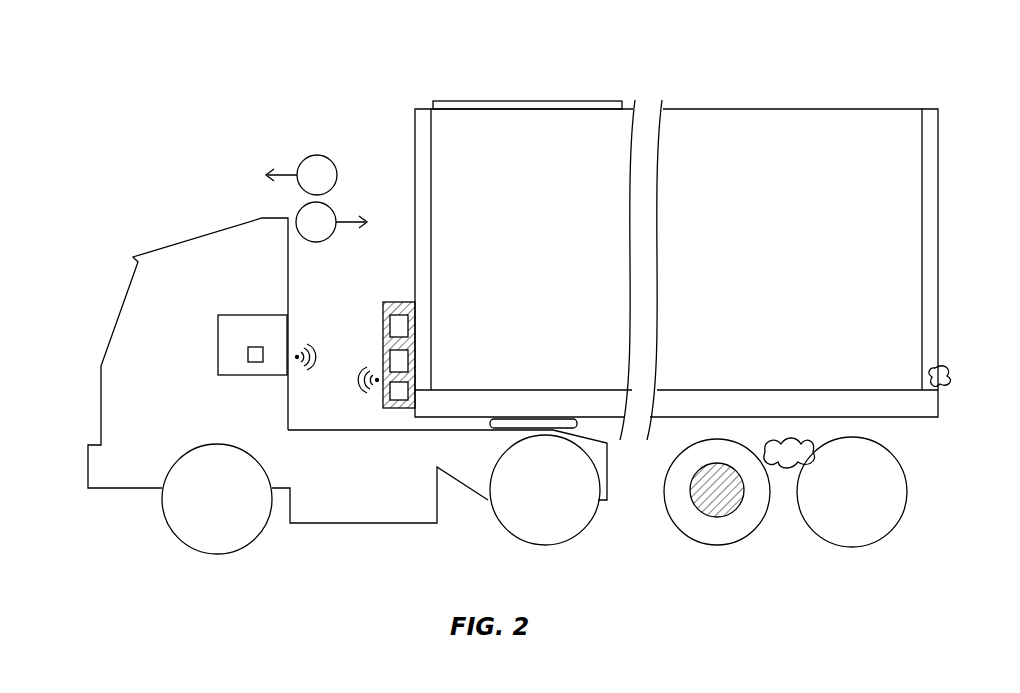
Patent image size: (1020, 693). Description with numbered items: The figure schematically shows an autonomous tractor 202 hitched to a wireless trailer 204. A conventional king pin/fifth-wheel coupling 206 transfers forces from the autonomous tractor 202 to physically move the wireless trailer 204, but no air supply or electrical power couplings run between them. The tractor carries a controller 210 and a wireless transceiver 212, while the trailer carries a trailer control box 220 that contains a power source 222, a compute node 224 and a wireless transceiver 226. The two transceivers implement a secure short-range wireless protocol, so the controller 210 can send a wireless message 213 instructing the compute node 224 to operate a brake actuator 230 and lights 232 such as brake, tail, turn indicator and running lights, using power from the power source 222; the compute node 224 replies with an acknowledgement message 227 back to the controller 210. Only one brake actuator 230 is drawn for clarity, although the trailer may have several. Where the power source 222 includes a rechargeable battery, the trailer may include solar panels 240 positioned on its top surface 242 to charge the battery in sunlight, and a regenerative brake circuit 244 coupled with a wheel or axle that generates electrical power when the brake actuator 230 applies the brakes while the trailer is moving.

The autonomous tractor 202 is at (110, 370).
The wireless trailer 204 is at (427, 173).
The king pin/fifth-wheel coupling 206 is at (502, 435).
The controller 210 is at (233, 328).
The wireless transceiver 212 is at (248, 355).
The wireless message 213 is at (331, 222).
The trailer control box 220 is at (398, 300).
The power source 222 is at (383, 305).
The compute node 224 is at (383, 350).
The wireless transceiver 226 is at (383, 392).
The message 227 is at (301, 175).
The brake actuator 230 is at (800, 440).
The lights 232 is at (935, 372).
The solar panels 240 is at (548, 105).
The top surface 242 is at (424, 106).
The regenerative brake circuit 244 is at (728, 497).